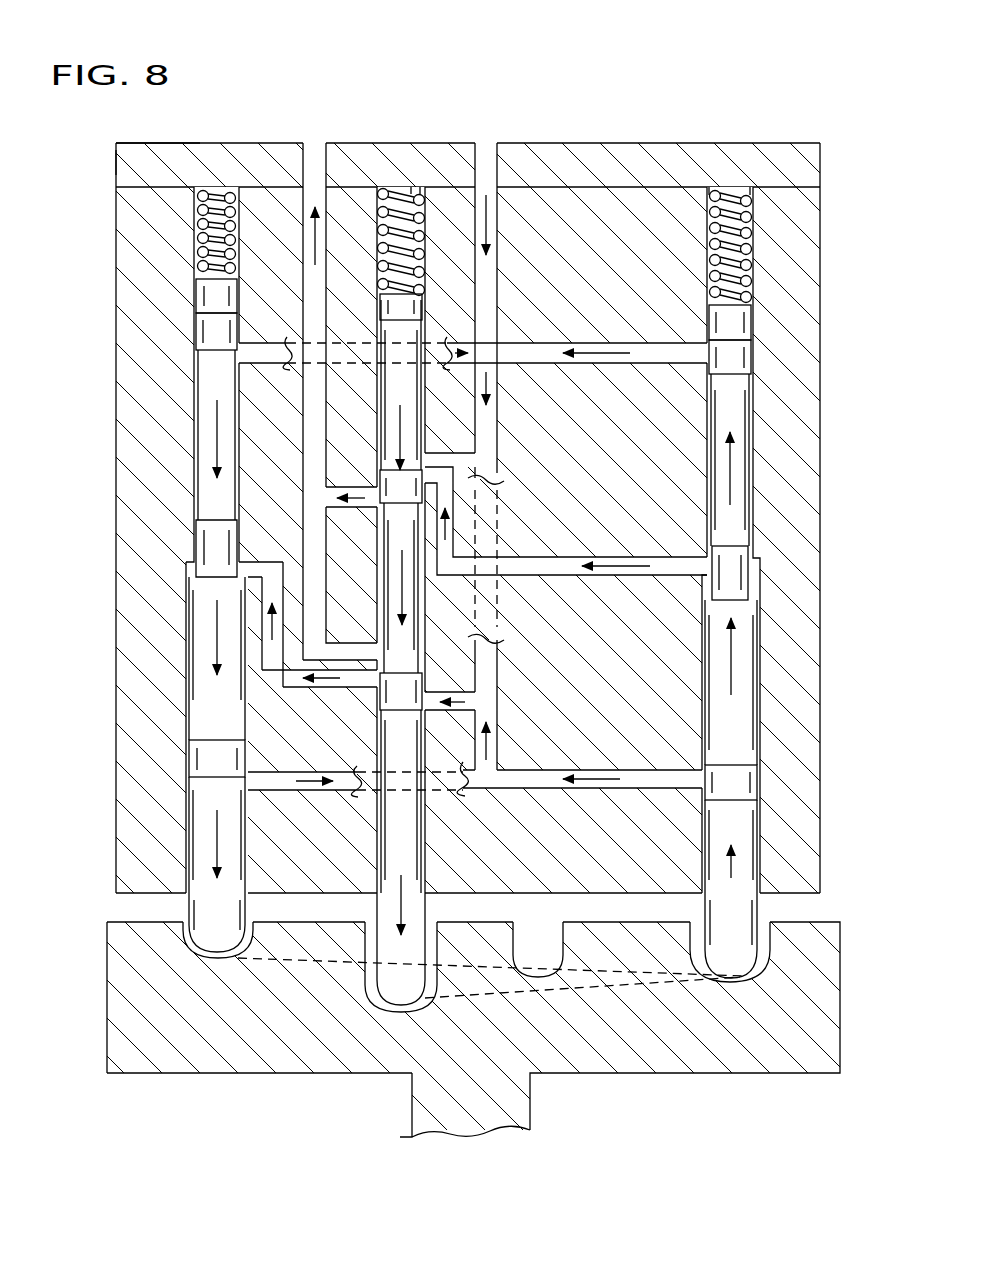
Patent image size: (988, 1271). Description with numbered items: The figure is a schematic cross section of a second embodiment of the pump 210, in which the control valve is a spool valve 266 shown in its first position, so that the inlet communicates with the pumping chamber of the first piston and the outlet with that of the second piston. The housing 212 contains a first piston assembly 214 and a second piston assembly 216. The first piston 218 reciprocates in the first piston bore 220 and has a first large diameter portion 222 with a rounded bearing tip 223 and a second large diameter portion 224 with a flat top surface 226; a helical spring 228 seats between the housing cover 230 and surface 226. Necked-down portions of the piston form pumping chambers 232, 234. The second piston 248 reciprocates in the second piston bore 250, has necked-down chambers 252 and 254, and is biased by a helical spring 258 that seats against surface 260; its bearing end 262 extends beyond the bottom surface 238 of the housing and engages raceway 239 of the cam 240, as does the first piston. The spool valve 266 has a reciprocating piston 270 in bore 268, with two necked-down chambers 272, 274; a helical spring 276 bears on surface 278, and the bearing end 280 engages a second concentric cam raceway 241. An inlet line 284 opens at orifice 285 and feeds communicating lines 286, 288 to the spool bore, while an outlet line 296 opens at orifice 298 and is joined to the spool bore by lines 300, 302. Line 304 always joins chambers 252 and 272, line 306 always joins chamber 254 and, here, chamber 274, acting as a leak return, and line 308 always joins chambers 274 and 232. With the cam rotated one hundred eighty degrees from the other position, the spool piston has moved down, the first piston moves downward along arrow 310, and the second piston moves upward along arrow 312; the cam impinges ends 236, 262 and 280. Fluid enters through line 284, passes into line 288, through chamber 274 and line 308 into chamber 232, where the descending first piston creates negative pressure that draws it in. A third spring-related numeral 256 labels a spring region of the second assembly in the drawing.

The pump 210 is at (238, 72).
The housing 212 is at (120, 345).
The first piston assembly 214 is at (216, 178).
The second piston assembly 216 is at (727, 178).
The first piston 218 is at (200, 433).
The first piston bore 220 is at (116, 160).
The first large diameter portion 222 is at (195, 680).
The rounded bearing tip 223 is at (205, 960).
The second large diameter portion 224 is at (208, 300).
The flat top surface 226 is at (197, 268).
The helical spring 228 is at (198, 215).
The housing cover 230 is at (256, 160).
The pumping chamber 232 is at (186, 590).
The pumping chamber 234 is at (195, 762).
The piston end 236 is at (205, 920).
The bottom surface 238 is at (302, 897).
The raceway 239 is at (186, 942).
The cam 240 is at (832, 995).
The cam raceway 241 is at (545, 920).
The second piston 248 is at (754, 424).
The second piston bore 250 is at (760, 185).
The chamber 252 is at (760, 570).
The chamber 254 is at (759, 776).
The third spring 256 is at (752, 237).
The helical spring 258 is at (714, 187).
The surface 260 is at (393, 176).
The bearing end 262 is at (728, 982).
The spool valve 266 is at (375, 187).
The spool valve bore 268 is at (415, 187).
The spool valve piston 270 is at (432, 321).
The chamber 272 is at (378, 484).
The chamber 274 is at (334, 775).
The helical spring 276 is at (380, 200).
The surface 278 is at (425, 272).
The bearing end 280 is at (418, 1008).
The inlet line 284 is at (497, 242).
The orifice 285 is at (487, 55).
The communicating fluid line 286 is at (492, 412).
The communicating fluid line 288 is at (450, 690).
The outlet fluid line 296 is at (305, 143).
The orifice 298 is at (319, 145).
The line 300 is at (330, 507).
The line 302 is at (340, 620).
The line 304 is at (590, 557).
The line 306 is at (530, 770).
The line 308 is at (272, 690).
The arrow 310 is at (200, 838).
The arrow 312 is at (759, 864).